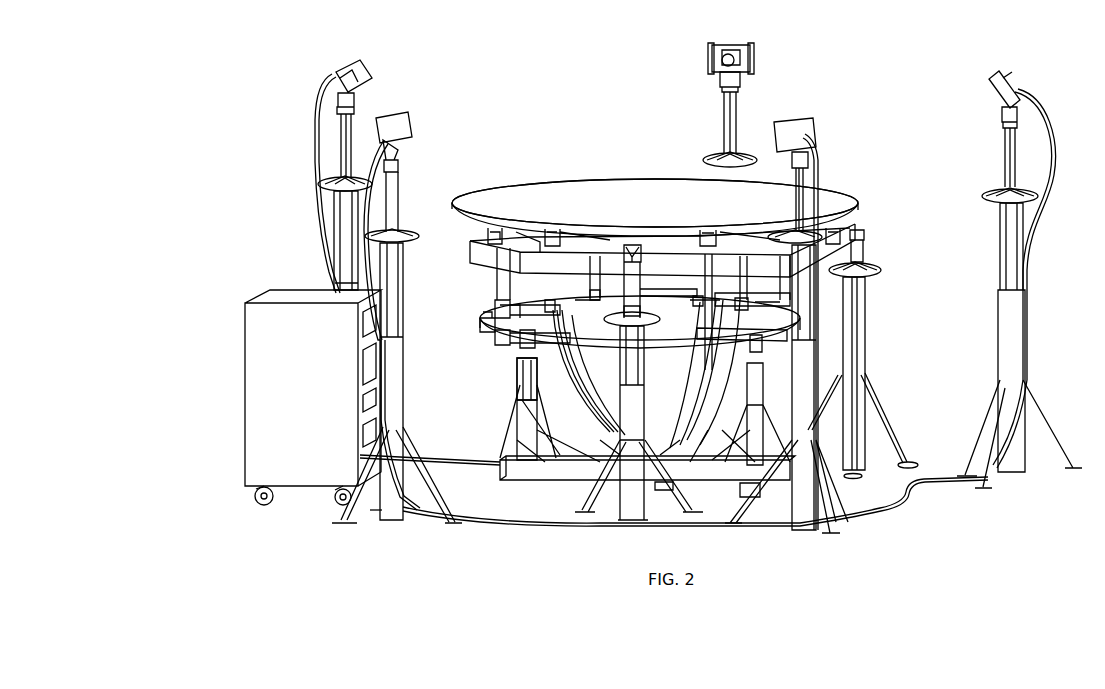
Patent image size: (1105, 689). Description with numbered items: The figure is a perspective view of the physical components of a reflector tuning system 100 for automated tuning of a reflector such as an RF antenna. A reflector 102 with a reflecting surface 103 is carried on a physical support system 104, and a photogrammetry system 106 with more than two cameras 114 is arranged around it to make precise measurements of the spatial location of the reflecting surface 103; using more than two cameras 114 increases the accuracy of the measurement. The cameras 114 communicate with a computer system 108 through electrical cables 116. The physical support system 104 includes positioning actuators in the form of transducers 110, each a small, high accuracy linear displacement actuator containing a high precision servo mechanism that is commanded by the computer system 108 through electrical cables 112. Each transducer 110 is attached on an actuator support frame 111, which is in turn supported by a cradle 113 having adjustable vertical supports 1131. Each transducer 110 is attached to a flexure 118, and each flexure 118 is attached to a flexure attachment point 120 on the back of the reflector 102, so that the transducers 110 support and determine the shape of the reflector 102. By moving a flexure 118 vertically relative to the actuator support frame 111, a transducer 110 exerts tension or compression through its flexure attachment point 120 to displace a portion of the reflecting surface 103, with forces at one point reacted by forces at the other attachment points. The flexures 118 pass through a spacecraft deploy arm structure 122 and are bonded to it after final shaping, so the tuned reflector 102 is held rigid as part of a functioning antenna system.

The reflector tuning system 100 is at (883, 49).
The reflector 102 is at (586, 178).
The reflecting surface 103 is at (650, 182).
The physical support system 104 is at (500, 399).
The photogrammetry system 106 is at (395, 52).
The computer system 108 is at (313, 397).
The transducers 110 is at (495, 308).
The actuator support frame 111 is at (482, 324).
The electrical cables 112 is at (524, 415).
The cradle 113 is at (552, 489).
The adjustable vertical supports 1131 is at (520, 371).
The cameras 114 is at (403, 116).
The electrical cables 116 is at (312, 128).
The flexure 118 is at (470, 262).
The flexure attachment point 120 is at (488, 233).
The spacecraft deploy arm structure 122 is at (858, 234).